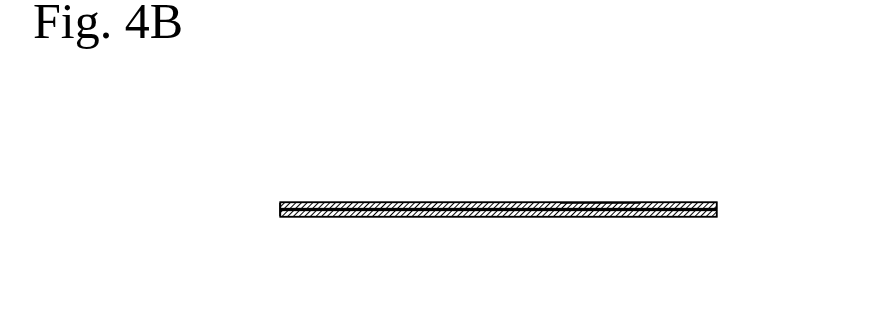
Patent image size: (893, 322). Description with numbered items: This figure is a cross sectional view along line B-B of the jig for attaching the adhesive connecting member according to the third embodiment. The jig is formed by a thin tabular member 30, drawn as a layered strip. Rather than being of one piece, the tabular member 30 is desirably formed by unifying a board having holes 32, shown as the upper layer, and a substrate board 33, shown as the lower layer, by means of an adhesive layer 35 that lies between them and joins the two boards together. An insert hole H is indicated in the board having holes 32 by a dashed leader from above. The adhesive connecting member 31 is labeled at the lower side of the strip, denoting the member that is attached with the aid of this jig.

The tabular member 30 is at (729, 202).
The adhesive connecting member 31 is at (368, 217).
The board having holes 32 is at (297, 202).
The substrate board 33 is at (302, 217).
The adhesive layer 35 is at (280, 205).
The insert hole H is at (593, 200).